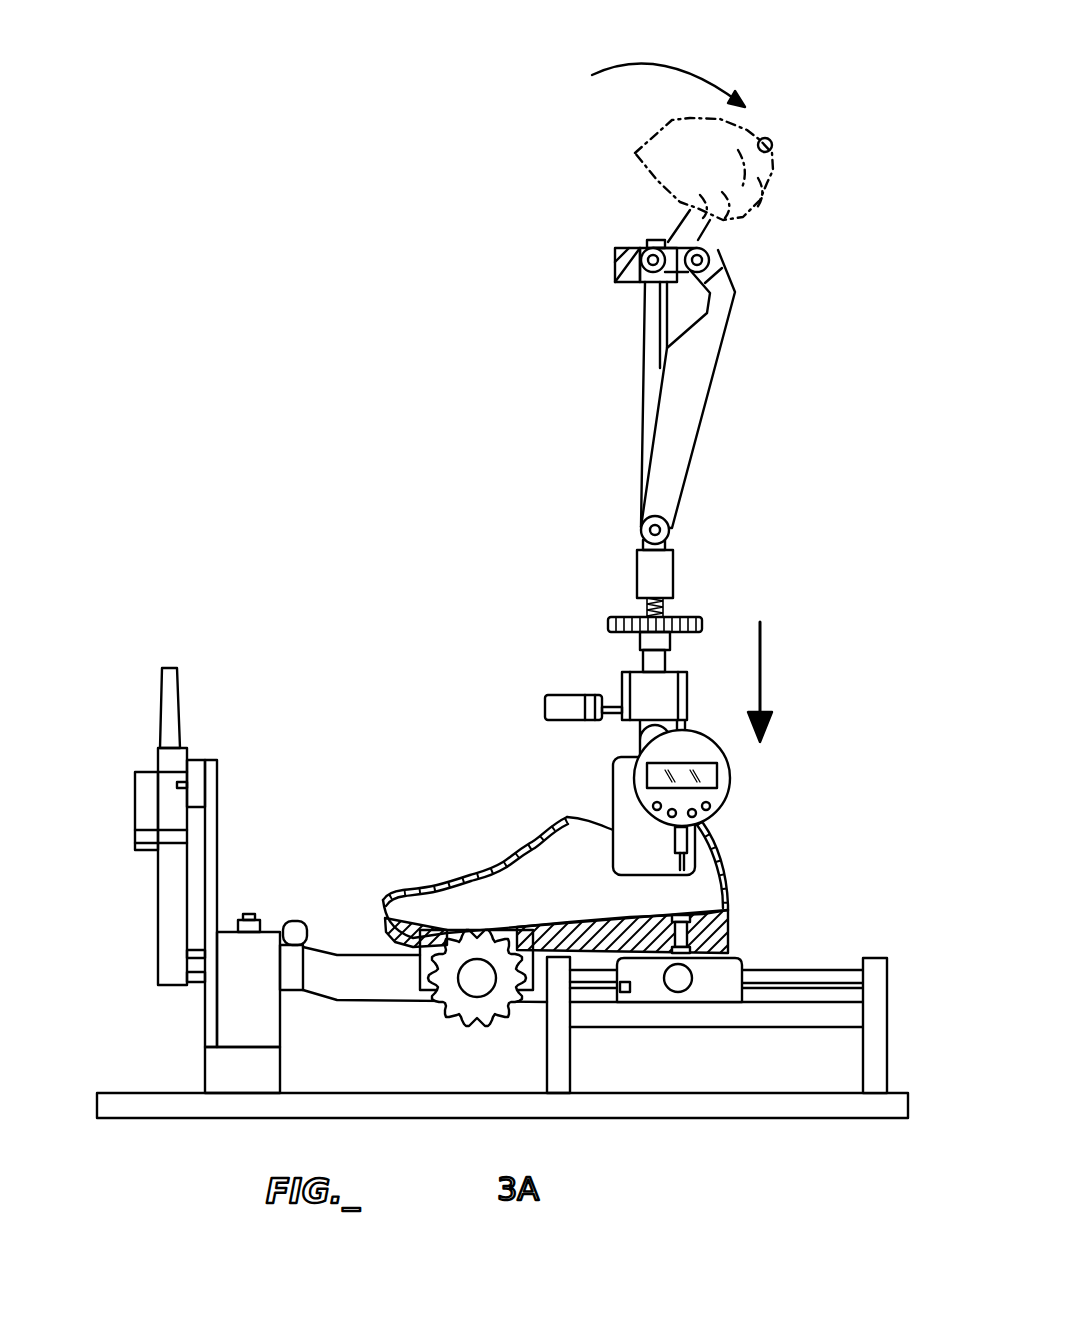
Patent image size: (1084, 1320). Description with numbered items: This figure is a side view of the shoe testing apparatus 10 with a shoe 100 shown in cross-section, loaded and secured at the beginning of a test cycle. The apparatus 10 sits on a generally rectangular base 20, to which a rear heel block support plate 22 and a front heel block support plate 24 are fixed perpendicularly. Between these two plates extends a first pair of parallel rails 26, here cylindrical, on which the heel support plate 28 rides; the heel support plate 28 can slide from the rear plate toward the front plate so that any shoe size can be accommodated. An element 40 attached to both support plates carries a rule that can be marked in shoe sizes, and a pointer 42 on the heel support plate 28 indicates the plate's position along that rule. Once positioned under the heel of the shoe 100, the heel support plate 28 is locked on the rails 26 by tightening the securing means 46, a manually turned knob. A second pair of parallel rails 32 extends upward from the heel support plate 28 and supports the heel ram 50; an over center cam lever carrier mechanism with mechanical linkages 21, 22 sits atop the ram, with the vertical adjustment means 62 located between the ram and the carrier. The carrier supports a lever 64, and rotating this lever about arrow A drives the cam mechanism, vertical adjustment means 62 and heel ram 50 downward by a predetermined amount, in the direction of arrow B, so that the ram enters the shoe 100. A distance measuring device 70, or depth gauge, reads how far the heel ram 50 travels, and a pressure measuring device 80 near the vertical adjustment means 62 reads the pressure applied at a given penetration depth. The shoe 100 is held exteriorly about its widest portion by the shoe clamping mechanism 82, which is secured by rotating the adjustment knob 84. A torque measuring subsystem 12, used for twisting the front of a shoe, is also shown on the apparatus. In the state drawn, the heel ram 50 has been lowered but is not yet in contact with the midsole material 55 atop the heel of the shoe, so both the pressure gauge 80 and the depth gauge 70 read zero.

The shoe testing apparatus 10 is at (460, 622).
The torque measuring subsystem 12 is at (135, 847).
The base 20 is at (440, 1108).
The mechanical linkage 21 is at (683, 385).
The rear heel block support plate 22 is at (663, 538).
The front heel block support plate 24 is at (550, 1052).
The first pair of parallel rails 26 is at (803, 975).
The heel support plate 28 is at (701, 997).
The second pair of parallel rails 32 is at (650, 315).
The rule element 40 is at (687, 1018).
The pointer 42 is at (626, 988).
The securing means 46 is at (685, 982).
The heel ram 50 is at (613, 860).
The midsole material 55 is at (644, 899).
The vertical adjustment means 62 is at (607, 622).
The lever 64 is at (690, 233).
The distance measuring device 70 is at (733, 787).
The pressure measuring device 80 is at (538, 705).
The shoe clamping mechanism 82 is at (385, 946).
The adjustment knob 84 is at (447, 1017).
The shoe 100 is at (460, 865).